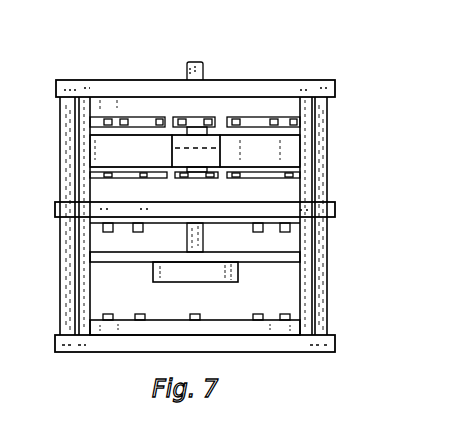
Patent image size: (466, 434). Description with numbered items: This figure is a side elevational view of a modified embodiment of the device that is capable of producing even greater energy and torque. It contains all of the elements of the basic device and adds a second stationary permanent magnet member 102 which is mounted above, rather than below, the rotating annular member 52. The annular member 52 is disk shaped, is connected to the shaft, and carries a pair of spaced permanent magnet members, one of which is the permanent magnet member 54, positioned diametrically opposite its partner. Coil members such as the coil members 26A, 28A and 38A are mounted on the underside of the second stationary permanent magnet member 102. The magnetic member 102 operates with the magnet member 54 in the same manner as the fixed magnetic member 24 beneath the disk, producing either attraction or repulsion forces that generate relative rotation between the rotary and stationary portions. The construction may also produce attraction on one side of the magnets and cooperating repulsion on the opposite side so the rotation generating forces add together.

The fixed magnetic member 24 is at (277, 193).
The coil member 26A is at (207, 118).
The coil member 28A is at (135, 122).
The coil member 38A is at (250, 122).
The annular member 52 is at (113, 148).
The permanent magnet member 54 is at (190, 153).
The second stationary permanent magnet member 102 is at (287, 108).